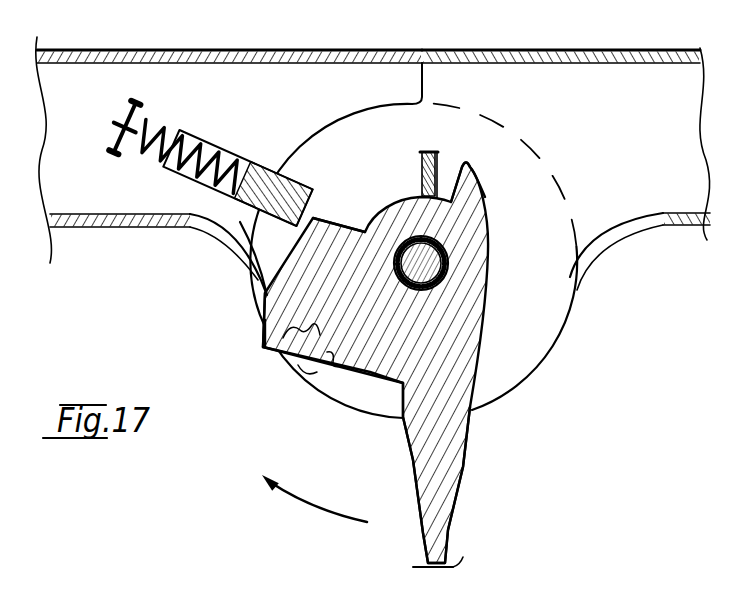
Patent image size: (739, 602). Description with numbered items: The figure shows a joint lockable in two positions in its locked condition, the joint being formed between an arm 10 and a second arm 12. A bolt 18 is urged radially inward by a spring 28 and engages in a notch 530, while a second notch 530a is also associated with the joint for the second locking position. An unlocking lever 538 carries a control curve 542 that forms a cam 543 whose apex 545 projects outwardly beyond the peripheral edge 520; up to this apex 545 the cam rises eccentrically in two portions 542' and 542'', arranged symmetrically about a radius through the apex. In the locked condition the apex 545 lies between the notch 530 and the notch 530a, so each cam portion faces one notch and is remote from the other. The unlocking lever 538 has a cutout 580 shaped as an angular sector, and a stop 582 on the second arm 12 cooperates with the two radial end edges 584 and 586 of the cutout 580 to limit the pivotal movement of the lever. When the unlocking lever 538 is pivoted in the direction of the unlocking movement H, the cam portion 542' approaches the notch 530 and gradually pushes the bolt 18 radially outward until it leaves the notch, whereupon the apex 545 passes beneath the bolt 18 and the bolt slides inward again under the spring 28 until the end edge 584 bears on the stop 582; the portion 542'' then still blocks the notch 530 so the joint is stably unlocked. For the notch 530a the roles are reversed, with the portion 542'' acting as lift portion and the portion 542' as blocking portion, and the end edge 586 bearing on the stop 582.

The housing wall 10 is at (270, 78).
The second arm 12 is at (568, 75).
The spring 28 is at (160, 130).
The bolt 18 is at (262, 211).
The notch 530 is at (290, 187).
The radial end edge 584 is at (330, 224).
The cutout 580 is at (391, 204).
The stop 582 is at (438, 152).
The radial end edge 586 is at (455, 176).
The peripheral edge 520 is at (530, 373).
The unlocking lever 538 is at (455, 460).
The cam portion 542' is at (223, 269).
The cam 543 is at (257, 332).
The apex 545 is at (262, 348).
The control curve 542 is at (224, 355).
The other notch 530a is at (300, 368).
The cam portion 542'' is at (349, 411).
The unlocking movement H is at (307, 507).